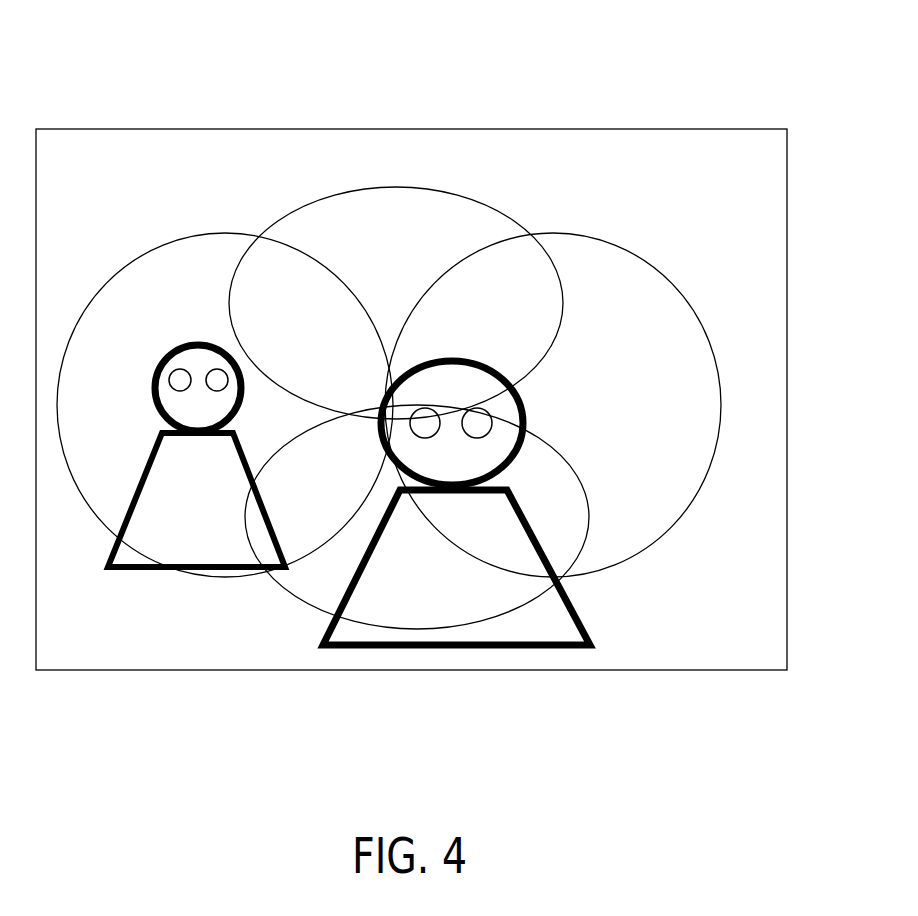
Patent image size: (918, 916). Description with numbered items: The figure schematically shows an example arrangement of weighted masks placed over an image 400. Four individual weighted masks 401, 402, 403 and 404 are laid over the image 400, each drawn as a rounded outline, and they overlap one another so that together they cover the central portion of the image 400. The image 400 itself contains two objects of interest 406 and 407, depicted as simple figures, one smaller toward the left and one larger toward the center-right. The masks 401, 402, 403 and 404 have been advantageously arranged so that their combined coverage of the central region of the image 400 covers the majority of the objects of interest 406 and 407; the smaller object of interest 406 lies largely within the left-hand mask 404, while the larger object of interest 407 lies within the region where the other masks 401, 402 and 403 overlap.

The image 400 is at (702, 127).
The weighted mask 401 is at (400, 218).
The weighted mask 402 is at (598, 262).
The weighted mask 403 is at (387, 592).
The weighted mask 404 is at (178, 277).
The object of interest 406 is at (198, 571).
The object of interest 407 is at (538, 622).